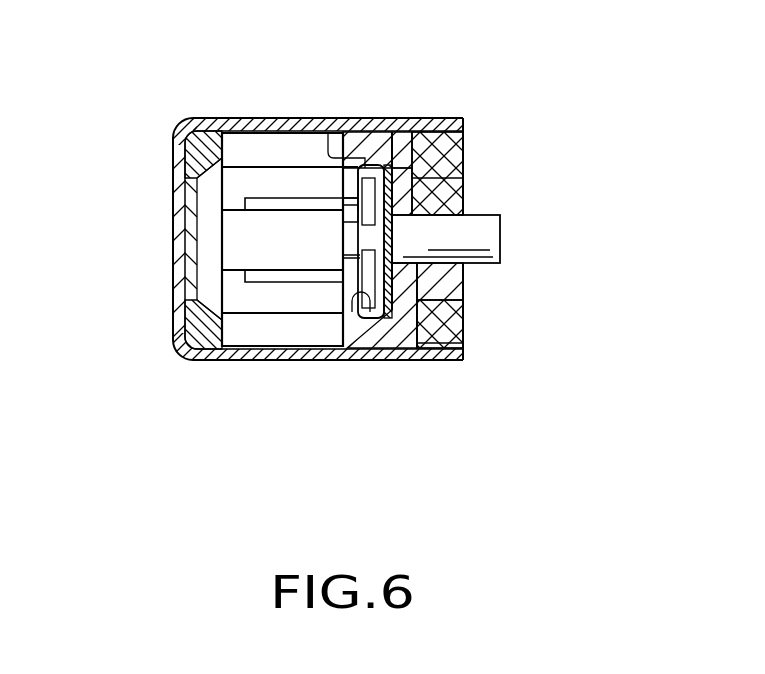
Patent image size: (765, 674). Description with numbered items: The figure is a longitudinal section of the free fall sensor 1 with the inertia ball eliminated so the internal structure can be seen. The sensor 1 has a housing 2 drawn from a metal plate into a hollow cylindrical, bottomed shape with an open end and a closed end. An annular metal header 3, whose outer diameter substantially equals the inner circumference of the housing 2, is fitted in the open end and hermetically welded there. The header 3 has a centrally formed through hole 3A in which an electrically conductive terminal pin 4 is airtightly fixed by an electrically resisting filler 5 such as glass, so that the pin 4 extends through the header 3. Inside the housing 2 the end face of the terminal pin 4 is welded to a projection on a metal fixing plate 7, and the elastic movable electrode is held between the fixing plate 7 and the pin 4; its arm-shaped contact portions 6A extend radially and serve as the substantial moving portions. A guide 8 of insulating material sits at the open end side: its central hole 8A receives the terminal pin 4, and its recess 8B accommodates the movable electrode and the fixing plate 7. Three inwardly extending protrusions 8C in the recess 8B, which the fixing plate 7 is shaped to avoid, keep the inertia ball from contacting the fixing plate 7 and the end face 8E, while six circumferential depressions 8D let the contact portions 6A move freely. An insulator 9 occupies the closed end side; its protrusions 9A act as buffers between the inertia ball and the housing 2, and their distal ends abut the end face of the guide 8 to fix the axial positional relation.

The free fall sensor 1 is at (516, 104).
The housing 2 is at (212, 362).
The header 3 is at (465, 323).
The through hole 3A is at (465, 286).
The terminal pin 4 is at (480, 238).
The filler 5 is at (445, 197).
The contact portions 6A is at (317, 203).
The fixing plate 7 is at (375, 165).
The guide 8 is at (392, 348).
The central hole 8A is at (410, 217).
The recess 8B is at (370, 350).
The protrusions 8C is at (352, 300).
The depressions 8D is at (341, 158).
The end face 8E is at (362, 237).
The insulator 9 is at (203, 325).
The protrusions 9A is at (258, 235).